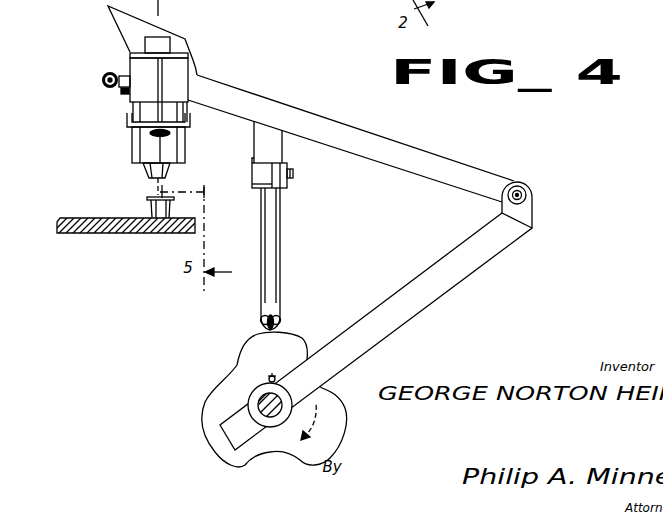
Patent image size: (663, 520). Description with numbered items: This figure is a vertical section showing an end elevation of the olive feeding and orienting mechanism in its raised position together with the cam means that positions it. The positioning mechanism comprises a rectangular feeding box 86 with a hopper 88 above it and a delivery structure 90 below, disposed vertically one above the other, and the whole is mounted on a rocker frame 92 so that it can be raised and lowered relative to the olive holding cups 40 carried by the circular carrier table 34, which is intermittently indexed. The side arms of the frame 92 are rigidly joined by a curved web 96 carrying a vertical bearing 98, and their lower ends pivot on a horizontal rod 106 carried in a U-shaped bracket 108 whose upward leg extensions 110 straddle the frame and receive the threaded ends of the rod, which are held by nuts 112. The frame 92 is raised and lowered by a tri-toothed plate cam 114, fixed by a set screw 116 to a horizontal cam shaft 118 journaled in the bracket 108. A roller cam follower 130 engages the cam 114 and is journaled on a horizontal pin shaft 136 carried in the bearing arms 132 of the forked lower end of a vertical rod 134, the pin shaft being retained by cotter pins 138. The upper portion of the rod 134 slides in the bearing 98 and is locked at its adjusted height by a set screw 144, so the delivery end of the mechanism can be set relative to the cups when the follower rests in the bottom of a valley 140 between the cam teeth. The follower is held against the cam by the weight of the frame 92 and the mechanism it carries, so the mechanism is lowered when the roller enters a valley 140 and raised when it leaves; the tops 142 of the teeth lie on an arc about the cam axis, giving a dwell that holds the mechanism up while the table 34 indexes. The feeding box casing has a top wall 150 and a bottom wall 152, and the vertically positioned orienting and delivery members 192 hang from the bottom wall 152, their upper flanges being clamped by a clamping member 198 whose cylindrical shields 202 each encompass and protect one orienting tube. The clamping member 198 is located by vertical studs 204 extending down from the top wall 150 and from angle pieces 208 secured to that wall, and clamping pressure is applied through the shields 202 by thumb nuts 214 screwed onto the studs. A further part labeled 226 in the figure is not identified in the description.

The carrier table 34 is at (73, 220).
The olive holding cups 40 is at (148, 203).
The feeding box 86 is at (121, 93).
The hopper 88 is at (121, 32).
The delivery structure 90 is at (132, 148).
The rocker frame 92 is at (353, 128).
The curved web 96 is at (262, 140).
The vertical bearing 98 is at (254, 168).
The horizontal rod 106 is at (517, 190).
The U-shaped bracket 108 is at (417, 277).
The upward leg extensions 110 is at (534, 206).
The nuts 112 is at (526, 191).
The tri-toothed plate cam 114 is at (280, 356).
The set screw 116 is at (270, 377).
The cam shaft 118 is at (267, 418).
The roller cam follower 130 is at (280, 322).
The bearing arms 132 is at (278, 315).
The vertical rod 134 is at (281, 278).
The horizontal pin shaft 136 is at (283, 327).
The cotter pins 138 is at (263, 323).
The valley 140 is at (232, 378).
The tops of the cam teeth 142 is at (248, 335).
The set screw 144 is at (293, 172).
The top wall 150 is at (189, 56).
The bottom wall 152 is at (130, 105).
The orienting and delivery member 192 is at (171, 168).
The clamping member 198 is at (195, 125).
The cylindrical shields 202 is at (179, 144).
The vertical studs 204 is at (158, 88).
The angle pieces 208 is at (134, 50).
The thumb nuts 214 is at (154, 140).
The knob 226 is at (117, 75).